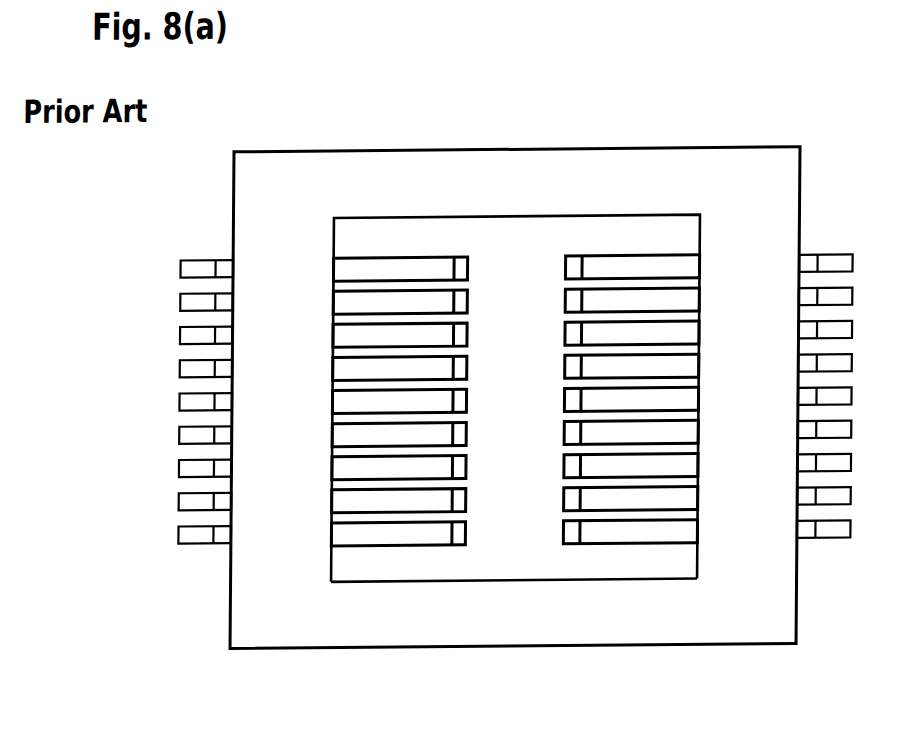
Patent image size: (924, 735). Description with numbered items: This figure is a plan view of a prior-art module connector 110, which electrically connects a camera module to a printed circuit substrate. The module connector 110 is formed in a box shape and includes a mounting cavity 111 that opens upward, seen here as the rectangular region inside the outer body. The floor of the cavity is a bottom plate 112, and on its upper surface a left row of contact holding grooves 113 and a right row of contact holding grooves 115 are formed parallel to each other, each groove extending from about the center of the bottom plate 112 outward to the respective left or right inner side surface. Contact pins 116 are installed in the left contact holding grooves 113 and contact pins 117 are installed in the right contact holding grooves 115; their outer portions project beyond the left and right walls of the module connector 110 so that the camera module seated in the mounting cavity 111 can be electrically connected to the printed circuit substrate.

The module connector 110 is at (873, 118).
The mounting cavity 111 is at (529, 228).
The bottom plate 112 is at (526, 572).
The contact holding grooves 113 is at (456, 534).
The contact holding grooves 115 is at (574, 540).
The contact pins 116 is at (392, 256).
The contact pins 117 is at (651, 258).